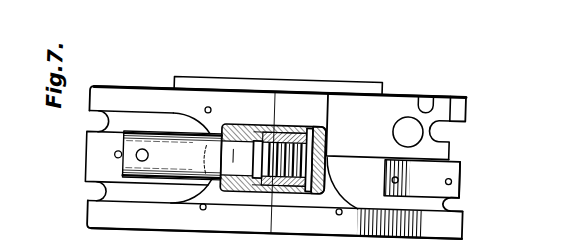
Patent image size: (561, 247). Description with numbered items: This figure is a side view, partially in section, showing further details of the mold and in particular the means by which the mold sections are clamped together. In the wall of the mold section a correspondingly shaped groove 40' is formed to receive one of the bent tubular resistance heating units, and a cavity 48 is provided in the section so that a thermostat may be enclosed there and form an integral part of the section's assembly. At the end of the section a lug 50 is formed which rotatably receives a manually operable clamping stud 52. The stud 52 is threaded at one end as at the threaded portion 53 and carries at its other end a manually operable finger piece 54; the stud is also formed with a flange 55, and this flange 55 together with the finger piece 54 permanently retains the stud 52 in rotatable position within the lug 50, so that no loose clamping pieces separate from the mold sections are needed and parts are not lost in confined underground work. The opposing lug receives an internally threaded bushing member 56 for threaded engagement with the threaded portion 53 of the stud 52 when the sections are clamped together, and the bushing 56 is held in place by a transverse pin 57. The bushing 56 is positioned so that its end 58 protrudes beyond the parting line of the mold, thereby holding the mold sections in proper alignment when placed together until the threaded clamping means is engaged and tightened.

The grooves 40' is at (272, 156).
The cavity 48 is at (398, 124).
The lug 50 is at (247, 121).
The clamping stud 52 is at (227, 121).
The threaded portion 53 is at (271, 123).
The finger piece 54 is at (150, 140).
The flange 55 is at (256, 170).
The bushing member 56 is at (303, 121).
The transverse pin 57 is at (312, 118).
The bushing end 58 is at (272, 175).